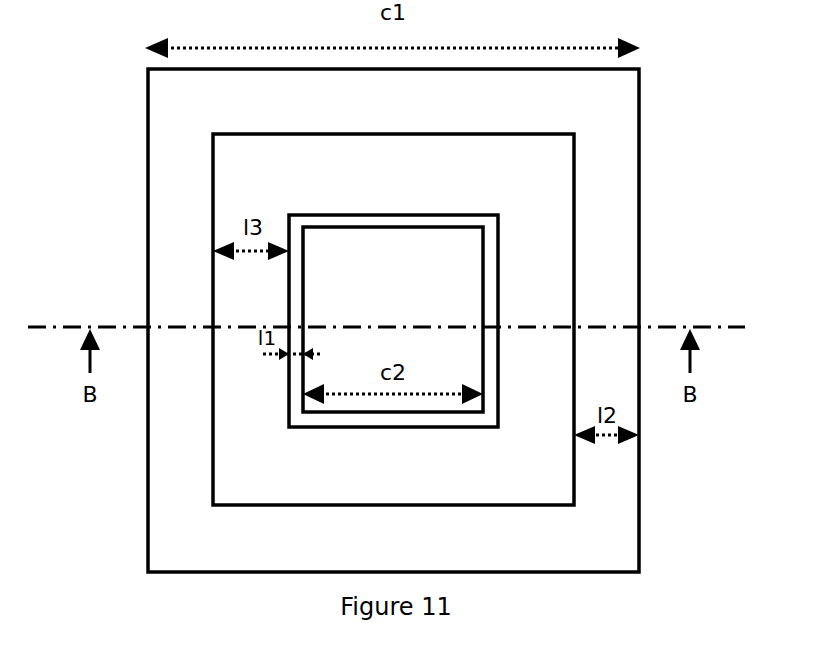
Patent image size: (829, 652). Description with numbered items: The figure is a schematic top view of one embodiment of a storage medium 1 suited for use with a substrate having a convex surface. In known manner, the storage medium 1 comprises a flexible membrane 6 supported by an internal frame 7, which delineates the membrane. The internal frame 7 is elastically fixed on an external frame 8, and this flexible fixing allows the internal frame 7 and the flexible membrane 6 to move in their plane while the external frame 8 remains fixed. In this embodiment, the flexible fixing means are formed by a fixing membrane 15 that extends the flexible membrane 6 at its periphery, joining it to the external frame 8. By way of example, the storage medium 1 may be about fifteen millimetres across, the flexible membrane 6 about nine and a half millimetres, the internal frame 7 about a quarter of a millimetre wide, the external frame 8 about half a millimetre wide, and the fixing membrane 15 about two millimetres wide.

The storage medium 1 is at (108, 243).
The flexible membrane 6 is at (468, 258).
The internal frame 7 is at (493, 306).
The external frame 8 is at (630, 547).
The fixing membrane 15 is at (567, 168).